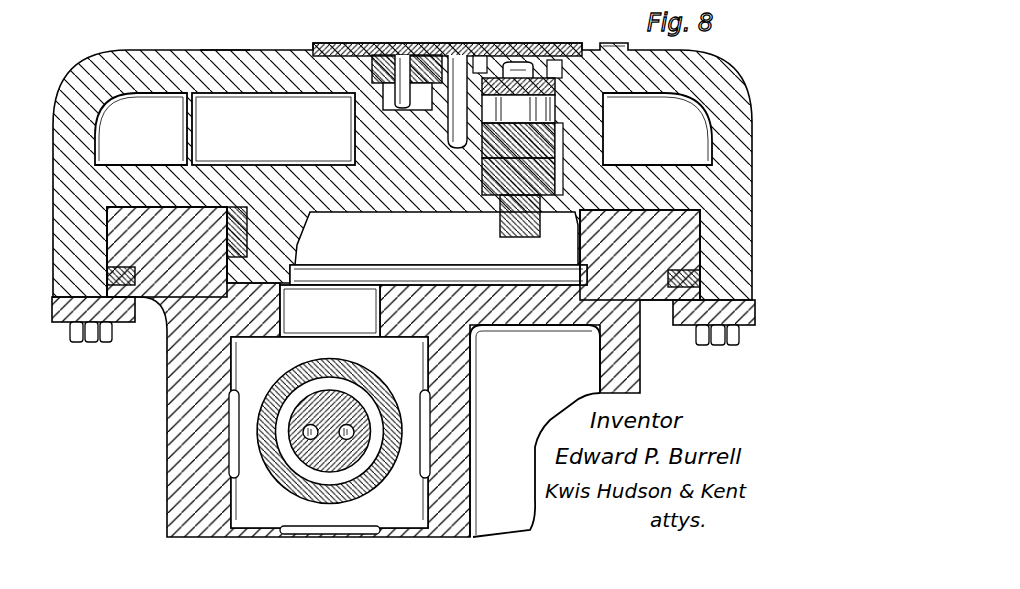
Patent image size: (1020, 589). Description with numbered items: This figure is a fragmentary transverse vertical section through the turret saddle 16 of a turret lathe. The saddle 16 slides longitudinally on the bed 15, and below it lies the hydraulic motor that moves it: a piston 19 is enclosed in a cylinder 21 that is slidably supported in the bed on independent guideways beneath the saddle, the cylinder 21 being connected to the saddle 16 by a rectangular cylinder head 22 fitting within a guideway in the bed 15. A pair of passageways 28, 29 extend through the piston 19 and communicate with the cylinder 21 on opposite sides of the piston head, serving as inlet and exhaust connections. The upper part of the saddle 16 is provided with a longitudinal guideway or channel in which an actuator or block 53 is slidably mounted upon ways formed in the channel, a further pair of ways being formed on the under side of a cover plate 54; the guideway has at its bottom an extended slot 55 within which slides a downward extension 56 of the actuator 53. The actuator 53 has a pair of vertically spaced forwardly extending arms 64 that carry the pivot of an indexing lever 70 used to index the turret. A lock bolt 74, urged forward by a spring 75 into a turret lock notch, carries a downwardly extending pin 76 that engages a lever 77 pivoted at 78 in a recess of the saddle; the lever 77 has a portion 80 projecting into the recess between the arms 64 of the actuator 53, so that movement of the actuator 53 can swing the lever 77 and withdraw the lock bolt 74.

The bed 15 is at (167, 378).
The turret saddle 16 is at (707, 90).
The piston 19 is at (333, 407).
The cylinder 21 is at (280, 384).
The cylinder head 22 is at (407, 365).
The passageway 28 is at (352, 436).
The passageway 29 is at (305, 437).
The actuator or block 53 is at (540, 172).
The cover plate 54 is at (347, 42).
The extended slot 55 is at (553, 215).
The downward extension 56 is at (517, 236).
The arms 64 is at (520, 62).
The indexing lever 70 is at (555, 117).
The lock bolt 74 is at (386, 55).
The spring 75 is at (225, 25).
The pin 76 is at (403, 56).
The lever 77 is at (423, 100).
The pivot 78 is at (457, 56).
The projecting portion 80 is at (493, 78).